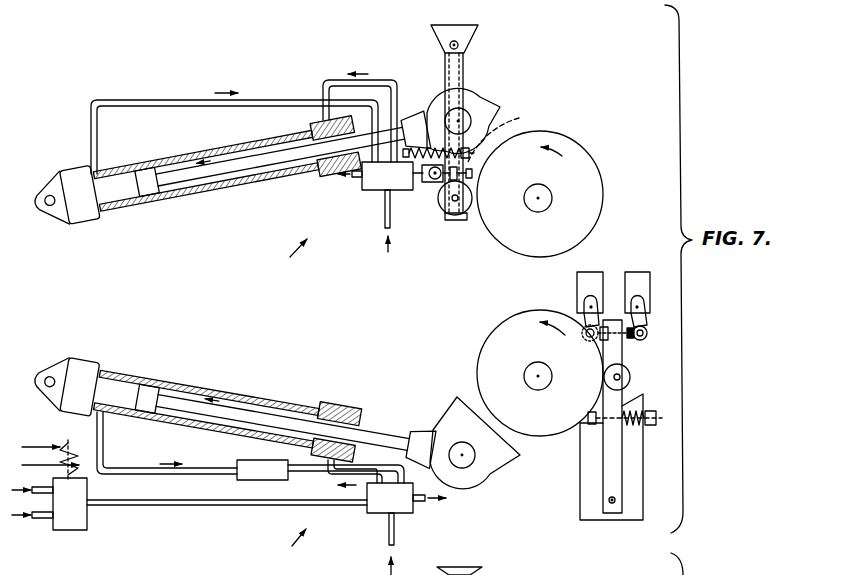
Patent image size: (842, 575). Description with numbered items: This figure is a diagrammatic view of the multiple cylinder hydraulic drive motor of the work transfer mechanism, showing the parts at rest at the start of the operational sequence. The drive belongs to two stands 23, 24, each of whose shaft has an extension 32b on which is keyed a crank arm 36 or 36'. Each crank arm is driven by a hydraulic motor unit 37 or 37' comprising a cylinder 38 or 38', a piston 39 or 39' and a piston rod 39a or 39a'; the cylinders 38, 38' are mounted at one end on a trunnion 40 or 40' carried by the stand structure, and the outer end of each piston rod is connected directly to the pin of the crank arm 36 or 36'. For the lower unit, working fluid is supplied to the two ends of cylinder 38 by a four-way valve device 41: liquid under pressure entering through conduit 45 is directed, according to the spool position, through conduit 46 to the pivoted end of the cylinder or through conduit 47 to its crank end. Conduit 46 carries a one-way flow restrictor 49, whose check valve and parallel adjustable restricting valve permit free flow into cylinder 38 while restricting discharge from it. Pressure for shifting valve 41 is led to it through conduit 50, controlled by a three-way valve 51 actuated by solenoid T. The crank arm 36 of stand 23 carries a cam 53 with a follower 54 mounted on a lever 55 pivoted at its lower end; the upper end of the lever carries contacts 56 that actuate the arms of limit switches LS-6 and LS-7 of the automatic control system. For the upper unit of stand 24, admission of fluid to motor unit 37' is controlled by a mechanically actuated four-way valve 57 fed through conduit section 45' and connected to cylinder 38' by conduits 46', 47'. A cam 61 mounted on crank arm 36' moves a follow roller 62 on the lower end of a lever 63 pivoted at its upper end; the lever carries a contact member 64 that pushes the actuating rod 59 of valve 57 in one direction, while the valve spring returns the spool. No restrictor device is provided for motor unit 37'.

The stand 23 is at (287, 546).
The stand 24 is at (289, 254).
The shaft extension 32b is at (552, 198).
The crank arm 36 is at (462, 428).
The crank arm 36' is at (474, 108).
The hydraulic motor unit 37 is at (226, 398).
The hydraulic motor unit 37' is at (226, 180).
The cylinder 38 is at (225, 388).
The cylinder 38' is at (225, 192).
The piston 39 is at (145, 372).
The piston 39' is at (138, 161).
The piston rod 39a is at (347, 401).
The piston rod 39a' is at (334, 174).
The trunnion 40 is at (62, 373).
The trunnion 40' is at (60, 188).
The four-way valve device 41 is at (412, 512).
The conduit 45 is at (373, 544).
The conduit section 45' is at (371, 235).
The conduit 46 is at (250, 447).
The conduit 46' is at (356, 96).
The conduit 47 is at (337, 478).
The conduit section 47' is at (234, 115).
The one-way flow restrictor 49 is at (238, 462).
The conduit 50 is at (200, 505).
The three-way valve 51 is at (84, 524).
The cam 53 is at (514, 313).
The follower 54 is at (631, 377).
The lever 55 is at (616, 448).
The contacts 56 is at (598, 340).
The four-way valve 57 is at (372, 191).
The actuating rod 59 is at (429, 185).
The cam 61 is at (592, 150).
The follow roller 62 is at (470, 216).
The lever 63 is at (459, 63).
The contact member 64 is at (506, 130).
The limit switch LS-6 is at (636, 279).
The limit switch LS-7 is at (588, 279).
The solenoid T is at (66, 442).